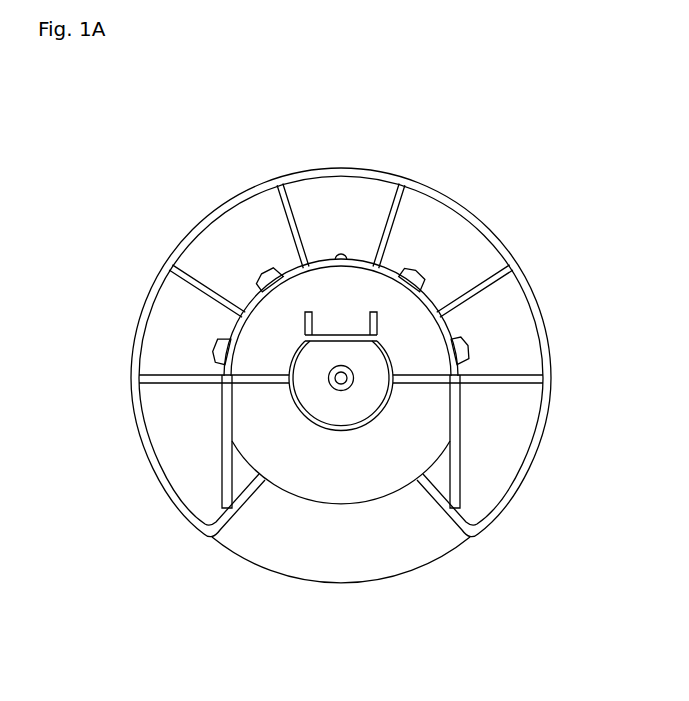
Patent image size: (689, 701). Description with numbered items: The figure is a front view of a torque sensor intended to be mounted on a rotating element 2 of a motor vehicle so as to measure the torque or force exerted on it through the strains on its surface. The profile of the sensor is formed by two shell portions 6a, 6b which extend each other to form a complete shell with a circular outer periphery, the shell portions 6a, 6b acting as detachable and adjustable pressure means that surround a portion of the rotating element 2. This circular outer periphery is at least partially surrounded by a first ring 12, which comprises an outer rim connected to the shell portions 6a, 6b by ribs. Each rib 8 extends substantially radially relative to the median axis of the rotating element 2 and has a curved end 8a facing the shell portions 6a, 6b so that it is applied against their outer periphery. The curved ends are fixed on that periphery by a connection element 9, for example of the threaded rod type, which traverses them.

The rotating element 2 is at (373, 360).
The shell portion 6a is at (347, 313).
The shell portion 6b is at (355, 460).
The rib 8 is at (203, 290).
The curved end 8a is at (210, 352).
The connection element 9 is at (266, 265).
The first ring 12 is at (203, 225).